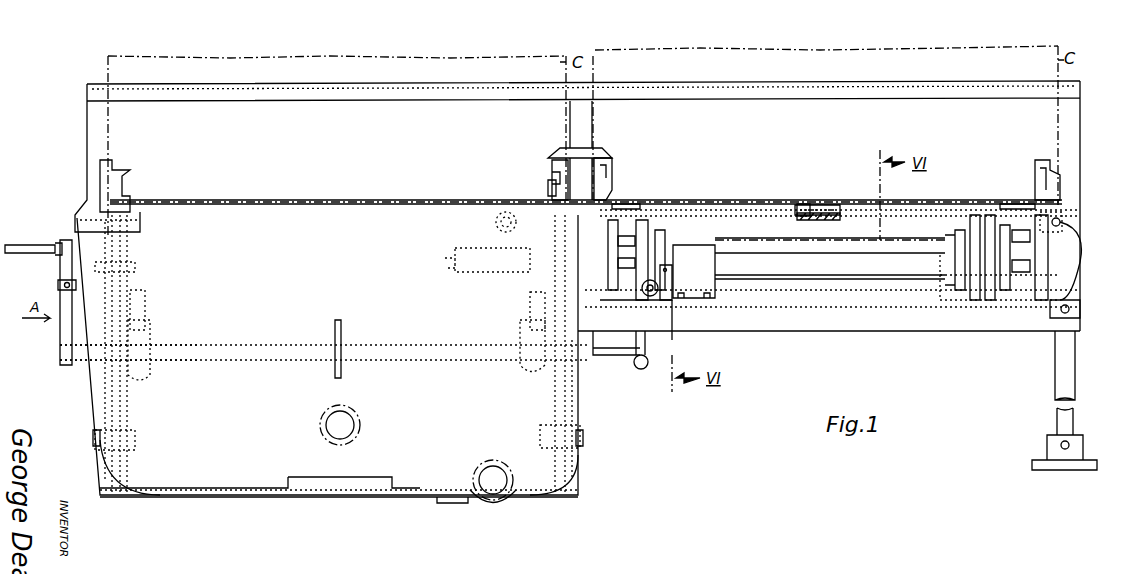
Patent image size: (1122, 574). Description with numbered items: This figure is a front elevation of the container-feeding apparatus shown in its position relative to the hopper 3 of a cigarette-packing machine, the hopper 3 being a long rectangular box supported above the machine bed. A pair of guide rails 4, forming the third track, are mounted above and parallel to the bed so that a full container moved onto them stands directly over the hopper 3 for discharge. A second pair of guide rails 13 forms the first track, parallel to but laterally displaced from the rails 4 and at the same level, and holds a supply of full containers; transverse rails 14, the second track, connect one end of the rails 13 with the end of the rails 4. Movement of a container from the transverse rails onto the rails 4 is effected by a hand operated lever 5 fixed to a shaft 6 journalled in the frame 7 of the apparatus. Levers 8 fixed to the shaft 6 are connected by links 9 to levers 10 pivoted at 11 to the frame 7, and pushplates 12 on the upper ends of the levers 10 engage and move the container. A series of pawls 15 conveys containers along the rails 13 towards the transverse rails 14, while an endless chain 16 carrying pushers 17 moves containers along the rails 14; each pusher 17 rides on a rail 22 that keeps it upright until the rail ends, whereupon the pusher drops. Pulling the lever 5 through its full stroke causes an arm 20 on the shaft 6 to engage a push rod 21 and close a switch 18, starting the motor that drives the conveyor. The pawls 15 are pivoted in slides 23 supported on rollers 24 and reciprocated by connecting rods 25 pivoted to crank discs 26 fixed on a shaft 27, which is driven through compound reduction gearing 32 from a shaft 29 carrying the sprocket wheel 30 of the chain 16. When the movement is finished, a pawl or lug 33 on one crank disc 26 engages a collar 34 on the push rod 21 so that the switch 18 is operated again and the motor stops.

The hopper 3 is at (422, 490).
The guide rails 4 is at (128, 198).
The hand operated lever 5 is at (60, 287).
The shaft 6 is at (614, 356).
The frame 7 is at (578, 476).
The levers 8 is at (143, 320).
The links 9 is at (135, 290).
The levers 10 is at (128, 256).
The pivot 11 is at (136, 438).
The pushplates 12 is at (128, 172).
The guide rails 13 is at (612, 192).
The transverse rails 14 is at (386, 200).
The pawls 15 is at (628, 204).
The endless chain 16 is at (832, 205).
The pushers 17 is at (810, 206).
The switch 18 is at (716, 287).
The arm 20 is at (647, 350).
The push rod 21 is at (646, 295).
The rail 22 is at (860, 233).
The slides 23 is at (630, 270).
The rollers 24 is at (618, 263).
The connecting rods 25 is at (642, 250).
The crank discs 26 is at (660, 265).
The shaft 27 is at (785, 246).
The shaft 29 is at (1060, 222).
The sprocket wheel 30 is at (1075, 225).
The compound reduction gearing 32 is at (955, 235).
The pawl or lug 33 is at (672, 270).
The collar 34 is at (672, 306).